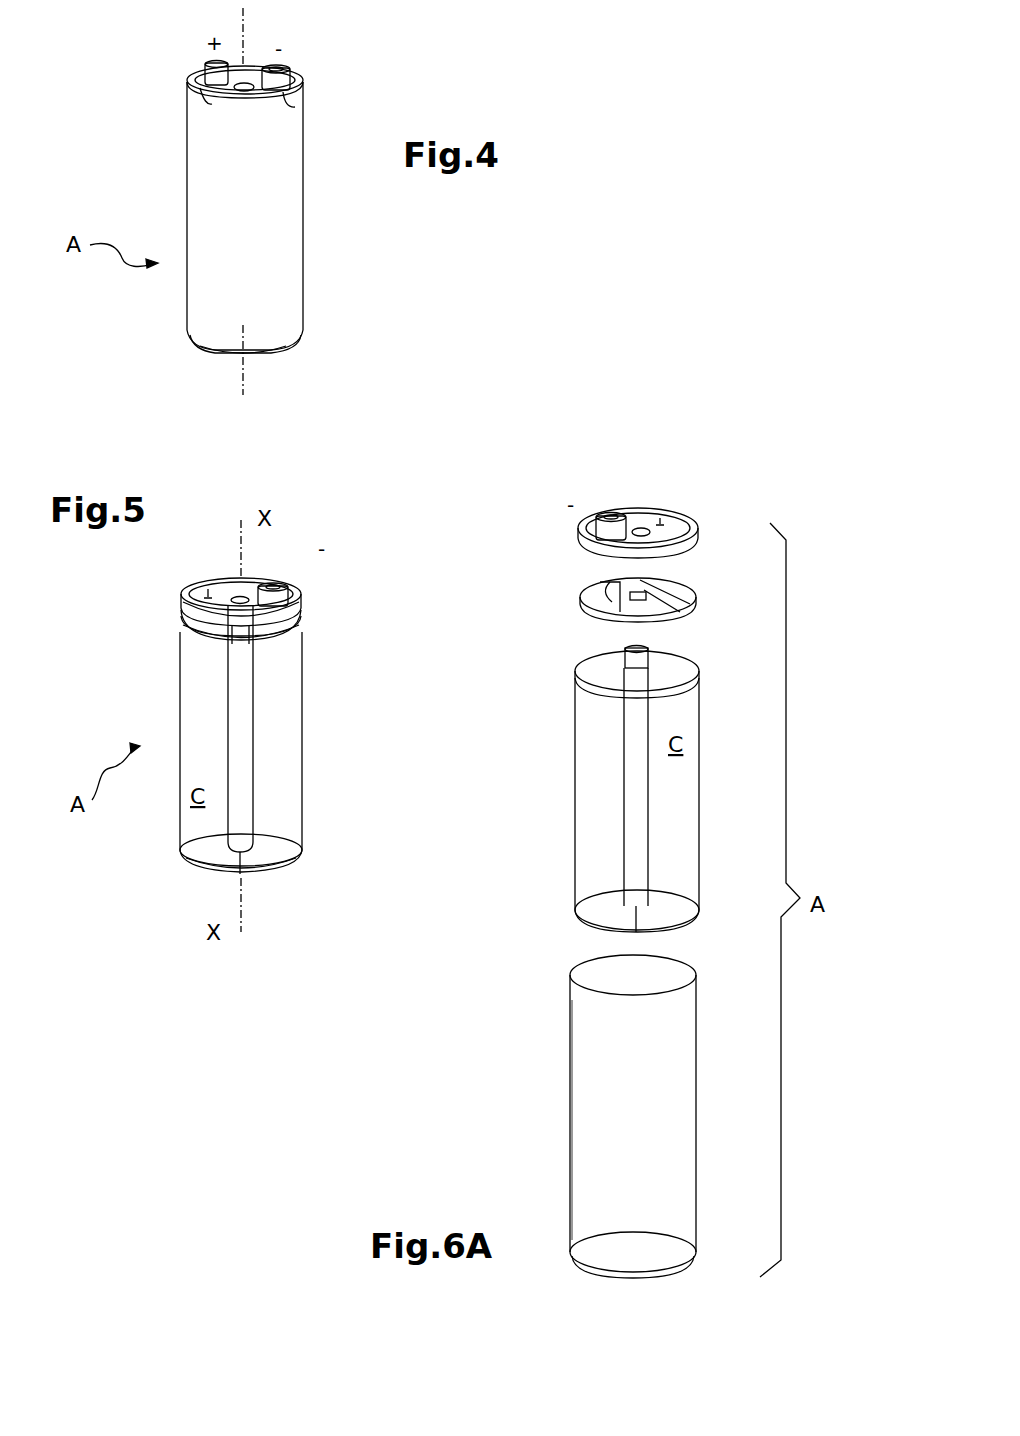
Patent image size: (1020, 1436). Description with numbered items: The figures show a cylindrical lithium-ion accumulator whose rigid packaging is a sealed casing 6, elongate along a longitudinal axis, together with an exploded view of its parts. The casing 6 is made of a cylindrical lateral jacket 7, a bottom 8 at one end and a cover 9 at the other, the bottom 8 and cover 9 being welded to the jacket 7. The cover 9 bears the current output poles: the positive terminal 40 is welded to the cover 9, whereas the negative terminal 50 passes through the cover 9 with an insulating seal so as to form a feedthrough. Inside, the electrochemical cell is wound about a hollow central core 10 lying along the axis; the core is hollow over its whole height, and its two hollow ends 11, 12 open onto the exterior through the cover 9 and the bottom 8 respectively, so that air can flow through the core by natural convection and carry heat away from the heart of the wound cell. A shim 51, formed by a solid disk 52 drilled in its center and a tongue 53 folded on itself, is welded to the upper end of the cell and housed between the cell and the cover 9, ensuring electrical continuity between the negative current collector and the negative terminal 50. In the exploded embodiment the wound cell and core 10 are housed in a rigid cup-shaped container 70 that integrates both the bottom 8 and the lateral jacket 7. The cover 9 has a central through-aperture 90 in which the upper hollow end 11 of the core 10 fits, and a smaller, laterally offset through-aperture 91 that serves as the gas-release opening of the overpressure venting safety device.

In FIG. 4, the casing 6 is at (290, 195).
In FIG. 5, the casing 6 is at (290, 720).
In FIG. 6A, the casing 6 is at (637, 791).
In FIG. 4, the cylindrical lateral jacket 7 is at (300, 268).
In FIG. 5, the cylindrical lateral jacket 7 is at (286, 812).
In FIG. 6A, the cylindrical lateral jacket 7 is at (560, 1086).
In FIG. 4, the bottom 8 is at (205, 348).
In FIG. 5, the bottom 8 is at (207, 845).
In FIG. 6A, the bottom 8 is at (600, 1266).
In FIG. 4, the cover 9 is at (300, 68).
In FIG. 5, the cover 9 is at (232, 590).
In FIG. 6A, the cover 9 is at (676, 524).
In FIG. 5, the hollow central core 10 is at (248, 752).
In FIG. 6A, the hollow central core 10 is at (640, 790).
In FIG. 6A, the upper hollow end 11 is at (634, 662).
In FIG. 5, the lower hollow end 12 is at (248, 876).
In FIG. 6A, the lower hollow end 12 is at (630, 930).
In FIG. 4, the positive terminal 40 is at (200, 102).
In FIG. 4, the negative terminal 50 is at (298, 108).
In FIG. 5, the negative terminal 50 is at (290, 600).
In FIG. 6A, the negative terminal 50 is at (598, 527).
In FIG. 5, the shim 51 is at (178, 620).
In FIG. 6A, the shim 51 is at (704, 598).
In FIG. 6A, the solid disk 52 is at (668, 606).
In FIG. 5, the tongue 53 is at (248, 638).
In FIG. 6A, the tongue 53 is at (610, 592).
In FIG. 6A, the rigid container 70 is at (506, 1158).
In FIG. 5, the central through-aperture 90 is at (246, 598).
In FIG. 6A, the central through-aperture 90 is at (640, 528).
In FIG. 5, the through-aperture 91 is at (206, 588).
In FIG. 6A, the through-aperture 91 is at (660, 516).